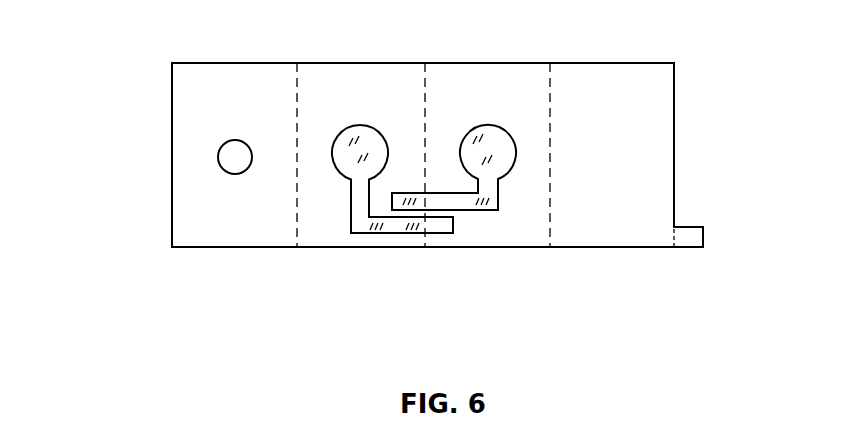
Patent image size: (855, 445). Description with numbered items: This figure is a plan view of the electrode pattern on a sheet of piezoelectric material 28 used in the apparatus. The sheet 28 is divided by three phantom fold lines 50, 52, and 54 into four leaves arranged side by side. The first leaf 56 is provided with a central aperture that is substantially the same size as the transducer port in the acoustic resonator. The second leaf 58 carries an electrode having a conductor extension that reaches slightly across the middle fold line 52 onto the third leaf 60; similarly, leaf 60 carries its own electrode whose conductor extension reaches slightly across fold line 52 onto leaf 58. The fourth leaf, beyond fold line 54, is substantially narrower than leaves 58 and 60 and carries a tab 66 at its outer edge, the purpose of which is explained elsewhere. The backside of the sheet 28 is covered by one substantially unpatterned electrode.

The sheet of piezoelectric material 28 is at (148, 133).
The tab 66 is at (693, 230).
The phantom fold line 50 is at (296, 91).
The phantom fold line 52 is at (423, 76).
The phantom fold line 54 is at (553, 89).
The leaf 56 is at (200, 78).
The leaf 58 is at (355, 83).
The leaf 60 is at (500, 83).